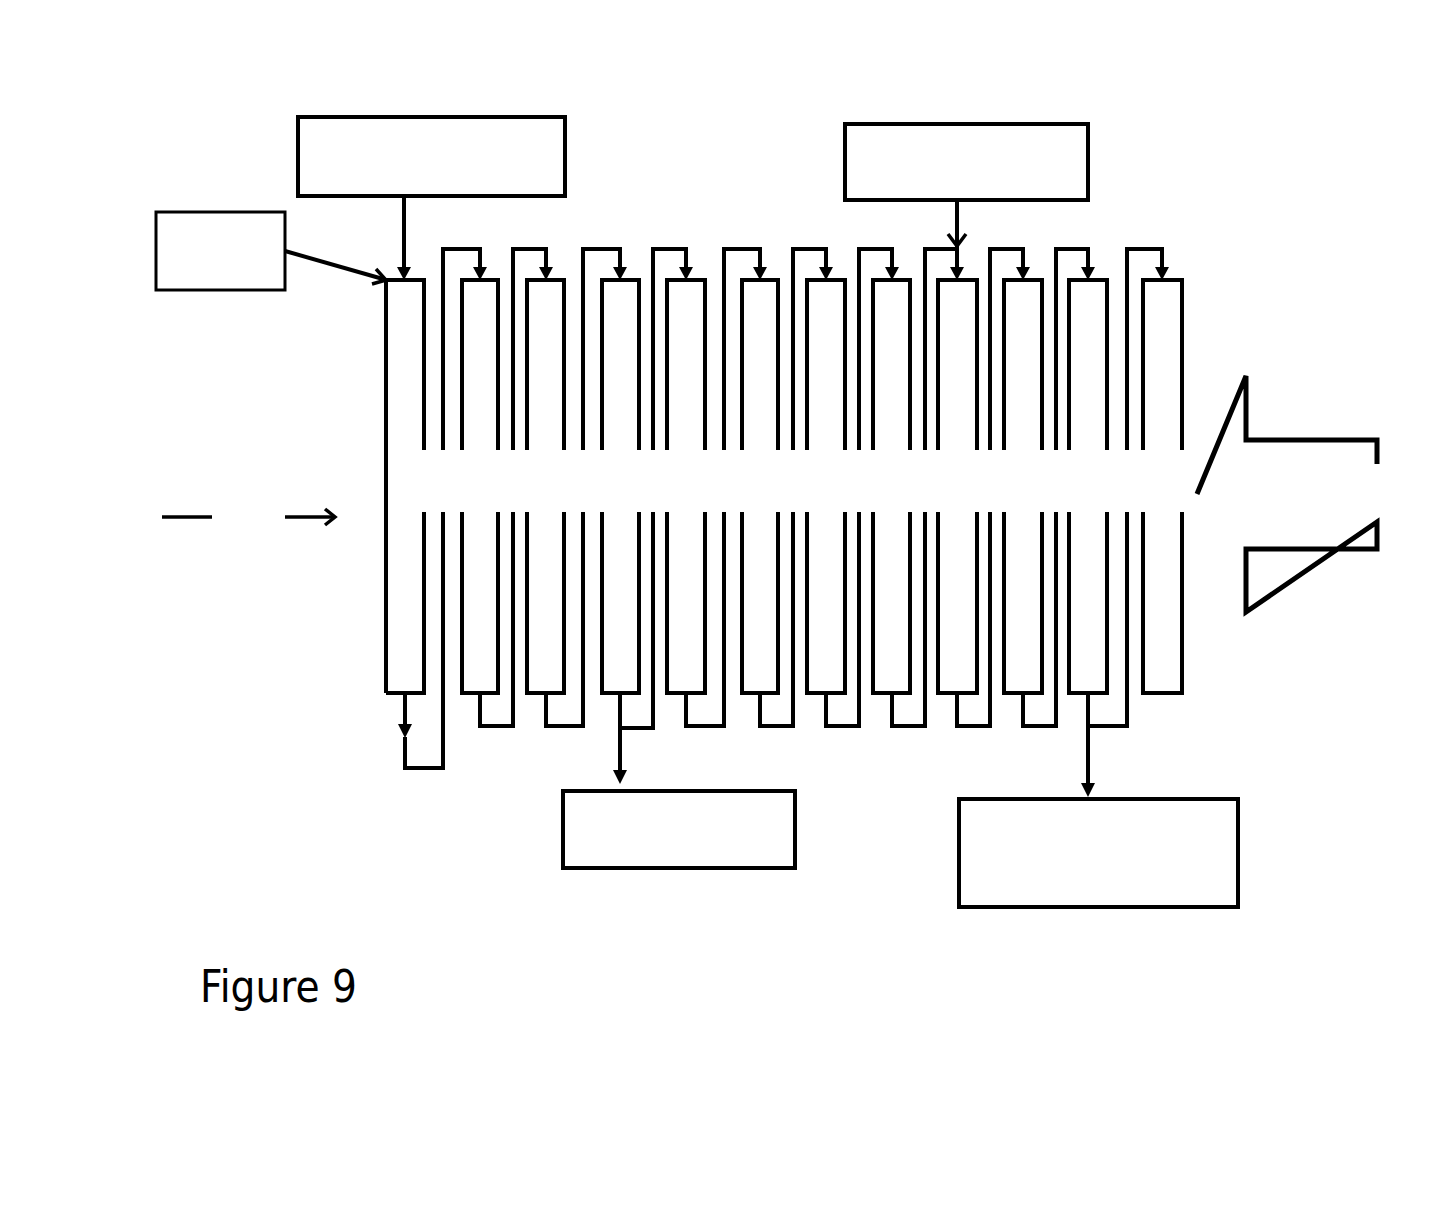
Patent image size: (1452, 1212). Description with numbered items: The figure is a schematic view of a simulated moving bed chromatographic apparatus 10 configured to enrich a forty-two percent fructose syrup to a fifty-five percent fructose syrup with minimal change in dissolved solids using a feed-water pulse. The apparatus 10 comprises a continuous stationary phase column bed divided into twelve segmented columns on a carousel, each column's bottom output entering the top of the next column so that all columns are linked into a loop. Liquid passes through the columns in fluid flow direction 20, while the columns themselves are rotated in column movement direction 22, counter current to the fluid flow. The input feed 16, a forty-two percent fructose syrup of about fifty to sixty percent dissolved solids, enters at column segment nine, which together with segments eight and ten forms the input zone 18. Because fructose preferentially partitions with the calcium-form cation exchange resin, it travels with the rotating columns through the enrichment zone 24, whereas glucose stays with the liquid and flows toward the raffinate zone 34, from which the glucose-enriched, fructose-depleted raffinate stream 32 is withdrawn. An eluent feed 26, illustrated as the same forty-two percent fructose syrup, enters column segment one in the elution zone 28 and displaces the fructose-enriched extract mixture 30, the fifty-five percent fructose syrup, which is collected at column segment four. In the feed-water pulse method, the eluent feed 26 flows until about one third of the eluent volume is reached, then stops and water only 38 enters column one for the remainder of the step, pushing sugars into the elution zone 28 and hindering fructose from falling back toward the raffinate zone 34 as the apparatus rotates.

The simulated moving bed chromatographic apparatus 10 is at (1233, 217).
The input feed 16 is at (830, 180).
The input zone 18 is at (971, 498).
The fluid flow direction 20 is at (248, 519).
The column movement direction 22 is at (1305, 494).
The enrichment zone 24 is at (741, 498).
The eluent feed 26 is at (290, 176).
The elution zone 28 is at (494, 498).
The fructose-enriched extract mixture 30 is at (552, 857).
The raffinate stream 32 is at (1241, 851).
The raffinate zone 34 is at (1107, 498).
The water only 38 is at (269, 281).